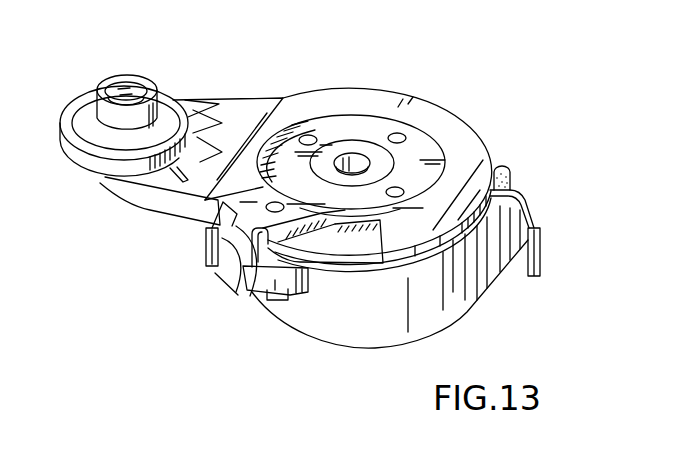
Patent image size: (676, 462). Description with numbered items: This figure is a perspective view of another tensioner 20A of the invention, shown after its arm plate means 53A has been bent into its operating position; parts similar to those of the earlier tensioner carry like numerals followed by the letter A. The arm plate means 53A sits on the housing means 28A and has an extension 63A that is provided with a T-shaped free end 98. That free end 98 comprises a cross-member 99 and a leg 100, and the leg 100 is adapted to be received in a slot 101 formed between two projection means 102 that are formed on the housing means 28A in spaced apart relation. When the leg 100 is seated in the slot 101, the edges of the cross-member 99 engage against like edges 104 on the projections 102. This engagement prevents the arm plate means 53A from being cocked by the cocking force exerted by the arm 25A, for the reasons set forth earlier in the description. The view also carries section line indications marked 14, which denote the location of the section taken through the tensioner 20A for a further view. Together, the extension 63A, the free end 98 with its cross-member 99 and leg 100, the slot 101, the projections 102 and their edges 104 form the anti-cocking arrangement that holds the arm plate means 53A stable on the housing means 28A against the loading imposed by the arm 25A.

The tensioner 20A is at (406, 59).
The arm plate means 53A is at (413, 147).
The housing means 28A is at (466, 300).
The arm 25A is at (102, 176).
The extension 63A is at (317, 238).
The leg 100 is at (207, 242).
The slot 101 is at (209, 260).
The T-shaped free end 98 is at (225, 283).
The cross-member 99 is at (254, 296).
The edges 104 is at (255, 298).
The projection means 102 is at (203, 224).
The section line 14- 14 is at (157, 288).